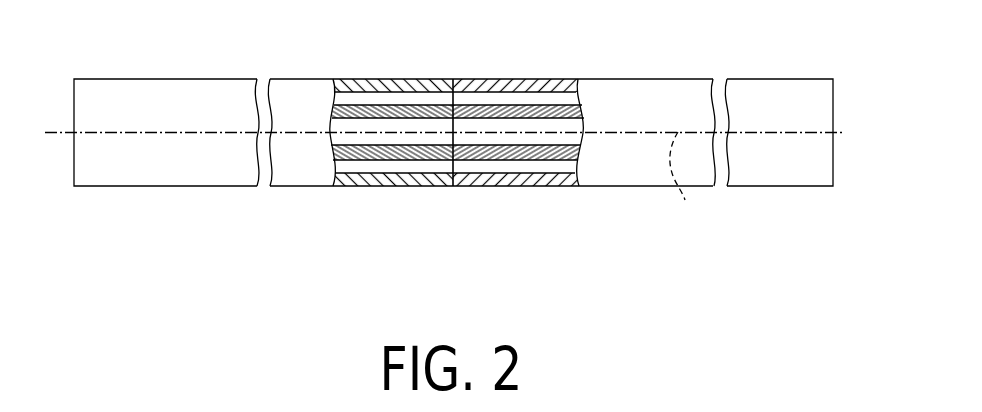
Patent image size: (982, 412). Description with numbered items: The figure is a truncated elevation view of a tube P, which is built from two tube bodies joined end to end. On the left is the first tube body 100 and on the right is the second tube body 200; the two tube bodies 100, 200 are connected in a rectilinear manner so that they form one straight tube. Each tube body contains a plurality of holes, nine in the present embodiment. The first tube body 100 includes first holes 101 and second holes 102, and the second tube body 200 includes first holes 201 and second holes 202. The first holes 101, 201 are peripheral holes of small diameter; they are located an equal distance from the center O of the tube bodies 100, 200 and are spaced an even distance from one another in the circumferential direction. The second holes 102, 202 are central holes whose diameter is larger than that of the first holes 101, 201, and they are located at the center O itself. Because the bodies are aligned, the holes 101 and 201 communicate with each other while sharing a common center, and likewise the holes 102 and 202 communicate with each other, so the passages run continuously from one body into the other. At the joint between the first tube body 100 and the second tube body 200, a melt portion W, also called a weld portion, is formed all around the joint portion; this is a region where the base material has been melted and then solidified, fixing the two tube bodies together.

The tube P is at (180, 77).
The first tube body 100 is at (192, 190).
The first holes 101 is at (370, 89).
The second holes 102 is at (374, 147).
The second tube body 200 is at (633, 190).
The first holes 201 is at (545, 88).
The second holes 202 is at (539, 148).
The melt portion W is at (453, 163).
The center O is at (677, 193).